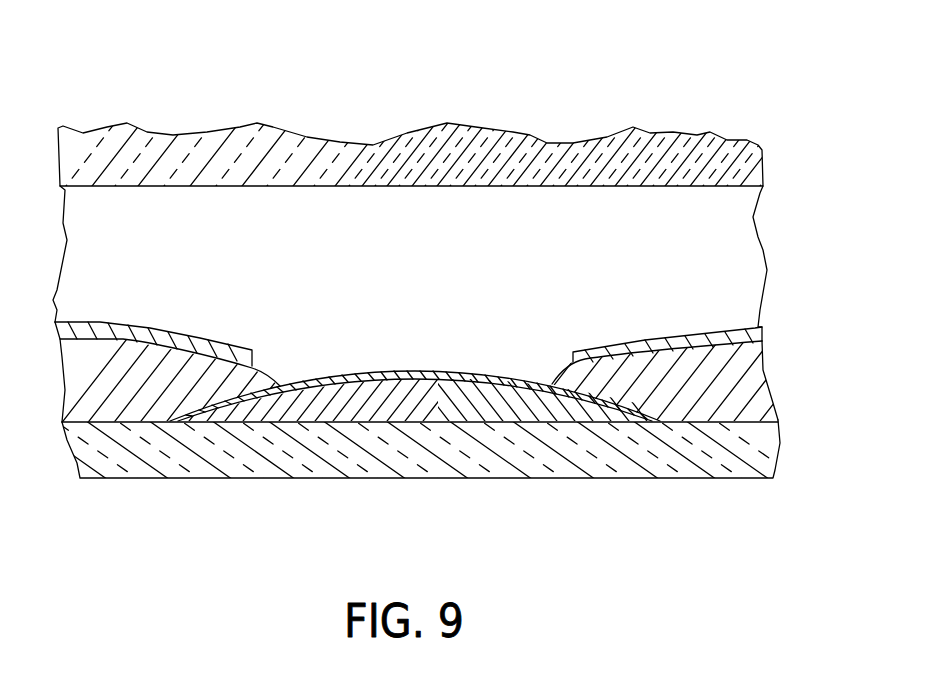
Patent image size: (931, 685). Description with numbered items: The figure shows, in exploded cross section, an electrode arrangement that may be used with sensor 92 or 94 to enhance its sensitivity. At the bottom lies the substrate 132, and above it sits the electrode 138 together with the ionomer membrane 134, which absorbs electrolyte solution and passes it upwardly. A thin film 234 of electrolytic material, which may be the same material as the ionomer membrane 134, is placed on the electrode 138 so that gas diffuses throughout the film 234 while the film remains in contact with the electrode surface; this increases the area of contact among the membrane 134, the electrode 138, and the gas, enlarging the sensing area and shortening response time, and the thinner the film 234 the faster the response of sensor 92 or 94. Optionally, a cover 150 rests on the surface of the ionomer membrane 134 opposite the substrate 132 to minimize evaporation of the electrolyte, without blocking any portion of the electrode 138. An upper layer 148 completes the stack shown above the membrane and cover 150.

The sensor 92 is at (423, 104).
The sensor 94 is at (426, 376).
The top layer 148 is at (711, 132).
The cover 150 is at (165, 328).
The ionomer membrane 134 is at (265, 377).
The thin film 234 is at (410, 372).
The electrode 138 is at (428, 422).
The substrate 132 is at (780, 443).